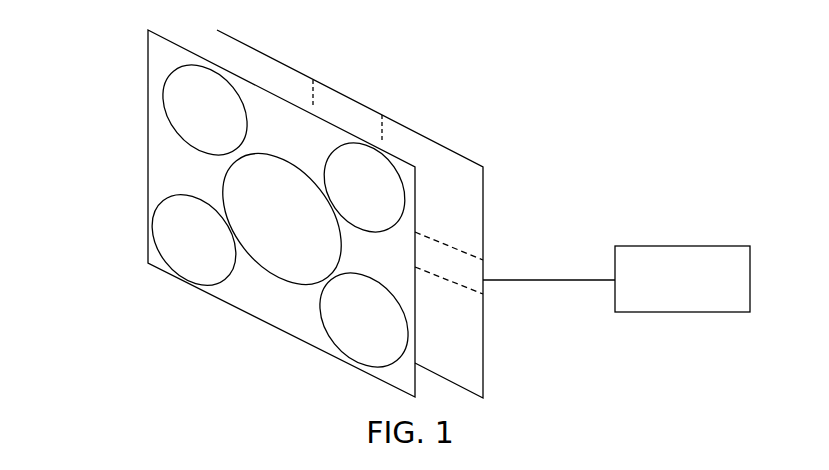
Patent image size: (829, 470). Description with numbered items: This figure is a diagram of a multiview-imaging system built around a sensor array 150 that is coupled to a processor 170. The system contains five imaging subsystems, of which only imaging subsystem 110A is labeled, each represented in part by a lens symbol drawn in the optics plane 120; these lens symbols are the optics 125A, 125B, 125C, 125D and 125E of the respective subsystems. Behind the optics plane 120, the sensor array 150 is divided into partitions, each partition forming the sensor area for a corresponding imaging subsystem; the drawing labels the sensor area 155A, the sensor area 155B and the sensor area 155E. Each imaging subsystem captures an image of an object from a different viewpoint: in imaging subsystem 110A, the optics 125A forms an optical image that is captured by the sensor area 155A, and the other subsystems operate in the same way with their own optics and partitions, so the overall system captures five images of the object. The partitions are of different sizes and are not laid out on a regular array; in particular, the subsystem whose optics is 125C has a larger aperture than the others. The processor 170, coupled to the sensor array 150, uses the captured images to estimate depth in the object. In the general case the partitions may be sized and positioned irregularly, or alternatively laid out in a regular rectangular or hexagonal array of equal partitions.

The imaging subsystem 110A is at (233, 213).
The optics plane 120 is at (281, 213).
The optics 125A is at (205, 109).
The optics 125B is at (364, 188).
The optics 125C is at (282, 219).
The optics 125D is at (194, 239).
The optics 125E is at (364, 320).
The sensor array 150 is at (347, 111).
The sensor area 155A is at (350, 214).
The sensor area 155B is at (449, 226).
The sensor area 155E is at (449, 296).
The processor 170 is at (616, 279).